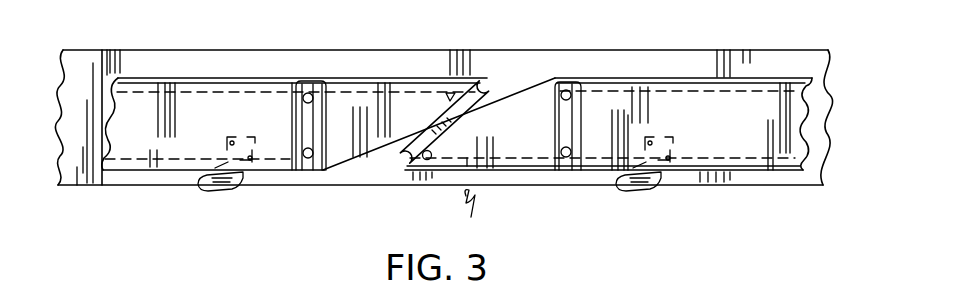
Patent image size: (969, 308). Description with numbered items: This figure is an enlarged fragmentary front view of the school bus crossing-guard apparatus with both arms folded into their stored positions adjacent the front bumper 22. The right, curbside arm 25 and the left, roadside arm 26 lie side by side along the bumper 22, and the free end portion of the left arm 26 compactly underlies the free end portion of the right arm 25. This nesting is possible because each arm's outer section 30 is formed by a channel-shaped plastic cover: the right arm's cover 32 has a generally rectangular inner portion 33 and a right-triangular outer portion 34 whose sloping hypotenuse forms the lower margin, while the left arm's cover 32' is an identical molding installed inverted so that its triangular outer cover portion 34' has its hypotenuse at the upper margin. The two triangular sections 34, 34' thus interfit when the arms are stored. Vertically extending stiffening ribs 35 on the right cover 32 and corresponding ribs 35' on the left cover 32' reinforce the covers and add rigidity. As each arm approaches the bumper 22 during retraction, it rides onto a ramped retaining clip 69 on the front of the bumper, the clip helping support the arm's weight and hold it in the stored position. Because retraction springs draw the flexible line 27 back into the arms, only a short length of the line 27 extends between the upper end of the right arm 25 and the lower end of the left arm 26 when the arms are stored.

The bumper 22 is at (550, 62).
The right arm 25 is at (212, 72).
The left arm 26 is at (677, 70).
The flexible line 27 is at (494, 93).
The outer section 30 is at (278, 86).
The cover 32 is at (198, 157).
The outer cover 32' is at (602, 169).
The inner portion 33 is at (137, 147).
The outer portion 34 is at (235, 169).
The outer cover portion 34' is at (604, 196).
The stiffening ribs 35 is at (328, 111).
The stiffening ribs 35' is at (547, 126).
The ramped retaining clip 69 is at (207, 195).